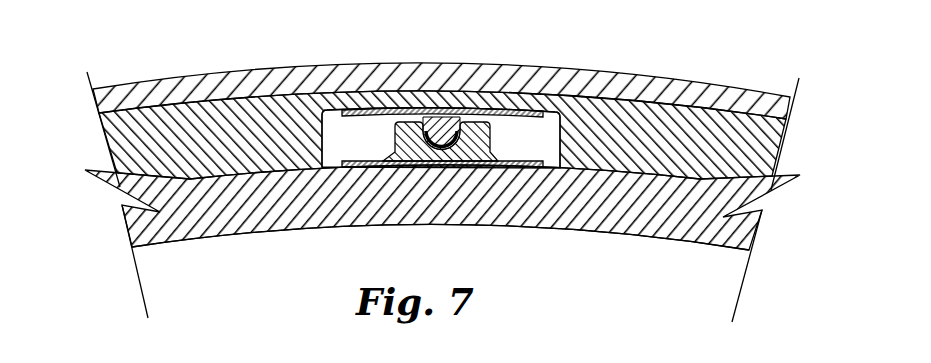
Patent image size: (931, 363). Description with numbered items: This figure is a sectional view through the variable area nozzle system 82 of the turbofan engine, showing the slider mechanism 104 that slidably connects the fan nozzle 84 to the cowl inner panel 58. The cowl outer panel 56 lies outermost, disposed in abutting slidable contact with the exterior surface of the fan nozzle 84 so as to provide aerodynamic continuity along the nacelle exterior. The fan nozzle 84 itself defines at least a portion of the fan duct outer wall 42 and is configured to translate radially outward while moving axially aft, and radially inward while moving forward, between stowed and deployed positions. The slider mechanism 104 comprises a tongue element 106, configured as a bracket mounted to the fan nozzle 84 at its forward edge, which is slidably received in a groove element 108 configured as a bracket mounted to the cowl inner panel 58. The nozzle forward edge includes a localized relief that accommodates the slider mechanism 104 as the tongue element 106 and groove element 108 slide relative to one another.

The variable area nozzle system 82 is at (423, 163).
The fan nozzle 84 is at (168, 127).
The cowl outer panel 56 is at (438, 72).
The slider mechanism 104 is at (382, 140).
The tongue element 106 is at (512, 117).
The groove element 108 is at (490, 142).
The fan duct outer wall 42 is at (238, 233).
The cowl inner panel 58 is at (635, 215).